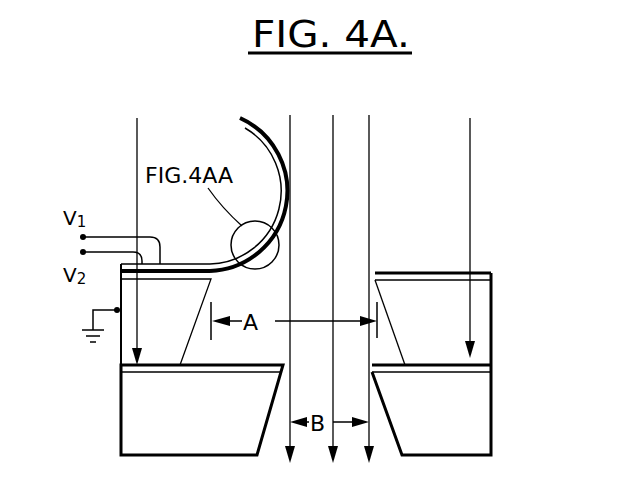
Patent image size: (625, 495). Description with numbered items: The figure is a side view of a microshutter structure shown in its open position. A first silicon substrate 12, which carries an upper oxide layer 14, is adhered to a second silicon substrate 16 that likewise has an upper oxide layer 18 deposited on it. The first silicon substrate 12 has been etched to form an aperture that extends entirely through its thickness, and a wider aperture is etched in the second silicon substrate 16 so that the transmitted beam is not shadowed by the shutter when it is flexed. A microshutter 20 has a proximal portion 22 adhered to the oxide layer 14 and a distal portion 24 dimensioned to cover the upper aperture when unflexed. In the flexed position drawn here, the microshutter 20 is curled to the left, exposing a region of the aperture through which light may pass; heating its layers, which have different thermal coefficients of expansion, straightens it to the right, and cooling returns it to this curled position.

The first silicon substrate 12 is at (482, 317).
The upper oxide layer 14 is at (487, 272).
The second silicon substrate 16 is at (492, 407).
The upper oxide layer 18 is at (492, 370).
The microshutter 20 is at (196, 157).
The proximal portion 22 is at (188, 261).
The distal portion 24 is at (276, 145).